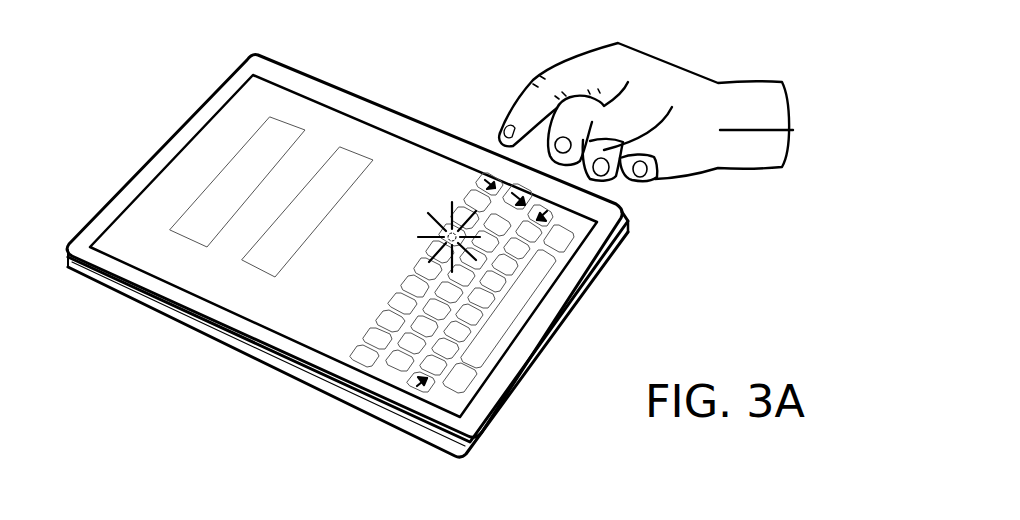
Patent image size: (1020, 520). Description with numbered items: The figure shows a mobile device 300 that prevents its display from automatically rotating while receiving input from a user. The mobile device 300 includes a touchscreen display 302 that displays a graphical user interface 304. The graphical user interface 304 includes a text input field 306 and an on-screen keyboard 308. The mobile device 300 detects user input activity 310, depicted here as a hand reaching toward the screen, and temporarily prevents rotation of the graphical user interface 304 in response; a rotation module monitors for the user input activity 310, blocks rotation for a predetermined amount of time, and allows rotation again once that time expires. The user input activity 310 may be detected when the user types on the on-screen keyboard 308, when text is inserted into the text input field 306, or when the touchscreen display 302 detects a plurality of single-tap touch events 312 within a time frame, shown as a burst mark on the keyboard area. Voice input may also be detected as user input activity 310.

The mobile device 300 is at (192, 118).
The touchscreen display 302 is at (245, 318).
The graphical user interface 304 is at (158, 244).
The text input field 306 is at (303, 122).
The on-screen keyboard 308 is at (362, 323).
The user input activity 310 is at (725, 48).
The single-tap touch events 312 is at (443, 210).